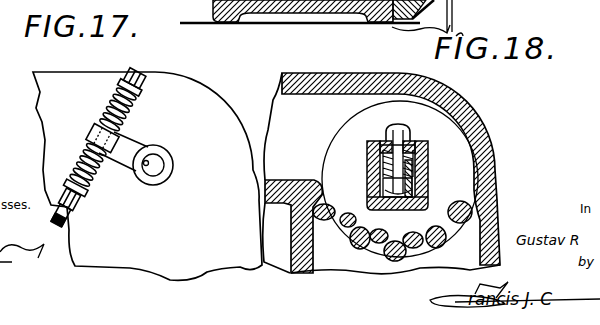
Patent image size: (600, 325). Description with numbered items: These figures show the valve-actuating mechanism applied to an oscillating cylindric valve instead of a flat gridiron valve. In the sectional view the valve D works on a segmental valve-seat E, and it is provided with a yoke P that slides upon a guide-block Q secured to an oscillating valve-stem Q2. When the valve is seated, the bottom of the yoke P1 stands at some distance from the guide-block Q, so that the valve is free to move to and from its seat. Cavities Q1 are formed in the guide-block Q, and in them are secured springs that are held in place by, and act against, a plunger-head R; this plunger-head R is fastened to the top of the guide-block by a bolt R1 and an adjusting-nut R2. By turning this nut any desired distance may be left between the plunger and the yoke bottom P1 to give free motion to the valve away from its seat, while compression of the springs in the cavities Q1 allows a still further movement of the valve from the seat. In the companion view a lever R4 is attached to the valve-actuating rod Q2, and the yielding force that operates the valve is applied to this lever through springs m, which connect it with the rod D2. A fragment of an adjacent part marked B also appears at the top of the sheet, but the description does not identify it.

In FIG. 17, the springs m is at (110, 96).
In FIG. 18, the springs m is at (380, 161).
In FIG. 17, the lever R4 is at (126, 150).
In FIG. 17, the oscillating valve-stem Q2 is at (165, 162).
In FIG. 17, the rod D2 is at (73, 234).
In FIG. 18, the frame part B is at (321, 18).
In FIG. 18, the valve D is at (392, 225).
In FIG. 18, the segmental valve-seat E is at (402, 254).
In FIG. 18, the guide-block Q is at (428, 151).
In FIG. 18, the cavities Q1 is at (418, 146).
In FIG. 18, the plunger-head R is at (392, 188).
In FIG. 18, the bolt R1 is at (383, 144).
In FIG. 18, the adjusting-nut R2 is at (396, 122).
In FIG. 18, the yoke P is at (429, 168).
In FIG. 18, the bottom of the yoke P1 is at (400, 210).